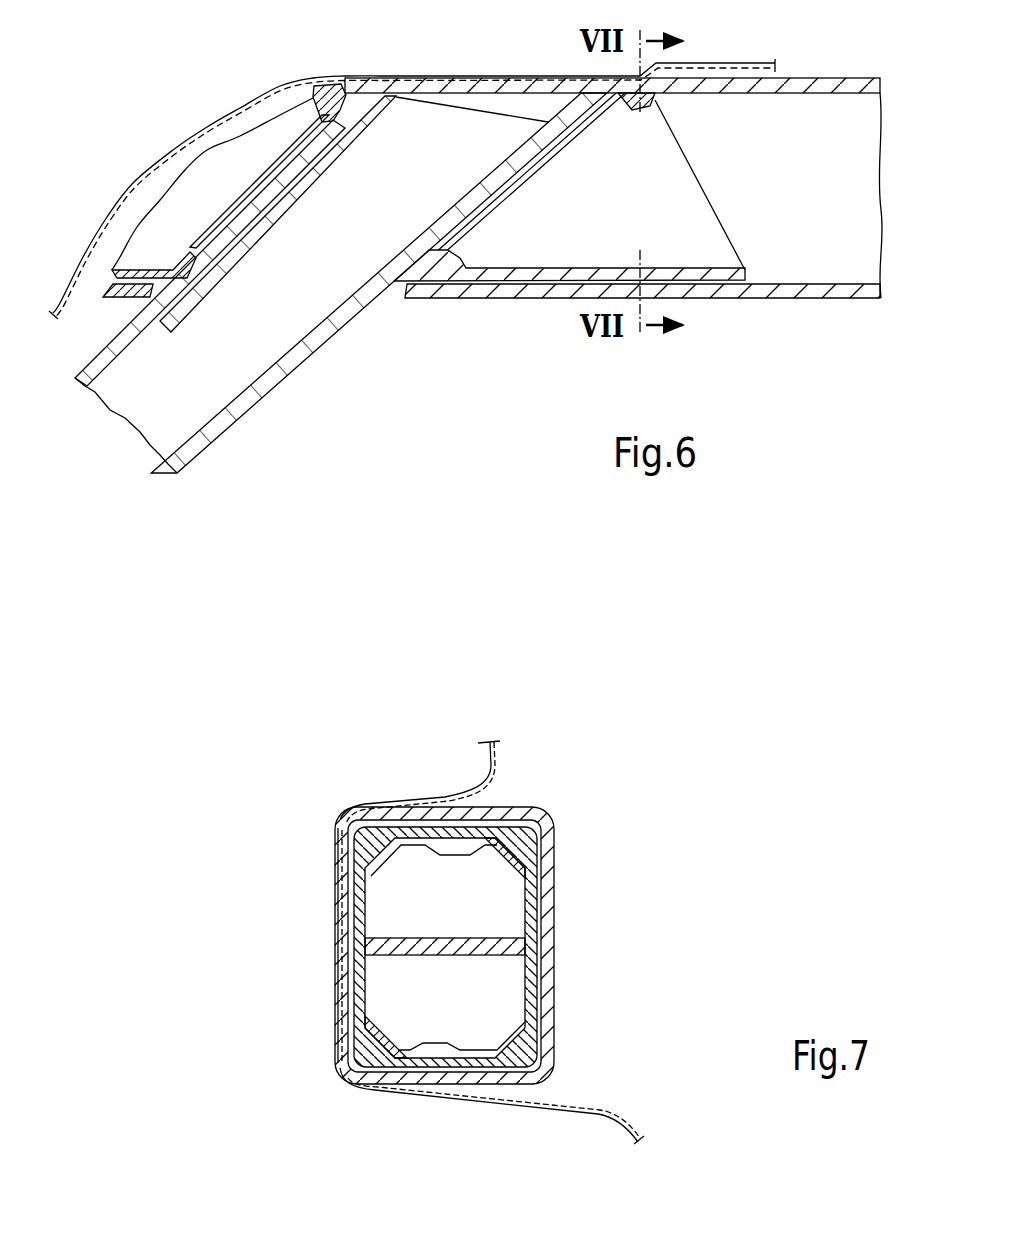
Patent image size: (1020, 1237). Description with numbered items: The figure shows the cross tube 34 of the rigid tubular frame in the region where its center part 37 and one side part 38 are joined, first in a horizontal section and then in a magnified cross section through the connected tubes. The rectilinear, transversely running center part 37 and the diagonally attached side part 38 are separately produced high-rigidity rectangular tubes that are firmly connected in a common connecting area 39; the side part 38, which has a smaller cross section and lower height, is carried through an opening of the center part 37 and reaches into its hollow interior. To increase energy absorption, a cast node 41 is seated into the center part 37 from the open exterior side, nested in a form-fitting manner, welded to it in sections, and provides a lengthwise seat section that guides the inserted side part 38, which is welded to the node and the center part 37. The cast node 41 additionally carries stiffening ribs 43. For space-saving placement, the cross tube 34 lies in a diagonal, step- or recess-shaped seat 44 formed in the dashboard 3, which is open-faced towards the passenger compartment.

In FIG. 6, the dashboard 3 is at (705, 62).
In FIG. 7, the dashboard 3 is at (610, 1118).
In FIG. 6, the cross tube 34 is at (863, 78).
In FIG. 6, the center part 37 is at (850, 300).
In FIG. 7, the center part 37 is at (552, 856).
In FIG. 6, the side part 38 is at (248, 412).
In FIG. 6, the connecting area 39 is at (425, 183).
In FIG. 6, the cast node 41 is at (240, 133).
In FIG. 7, the cast node 41 is at (537, 993).
In FIG. 7, the stiffening ribs 43 is at (473, 938).
In FIG. 7, the seat 44 is at (465, 800).